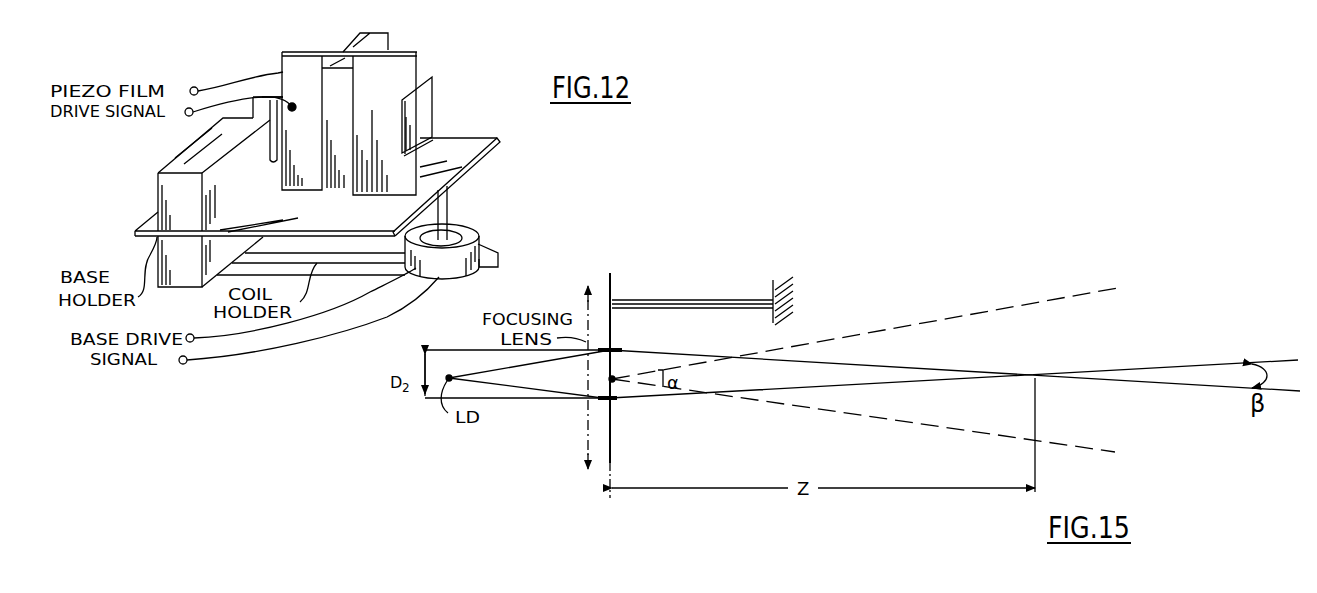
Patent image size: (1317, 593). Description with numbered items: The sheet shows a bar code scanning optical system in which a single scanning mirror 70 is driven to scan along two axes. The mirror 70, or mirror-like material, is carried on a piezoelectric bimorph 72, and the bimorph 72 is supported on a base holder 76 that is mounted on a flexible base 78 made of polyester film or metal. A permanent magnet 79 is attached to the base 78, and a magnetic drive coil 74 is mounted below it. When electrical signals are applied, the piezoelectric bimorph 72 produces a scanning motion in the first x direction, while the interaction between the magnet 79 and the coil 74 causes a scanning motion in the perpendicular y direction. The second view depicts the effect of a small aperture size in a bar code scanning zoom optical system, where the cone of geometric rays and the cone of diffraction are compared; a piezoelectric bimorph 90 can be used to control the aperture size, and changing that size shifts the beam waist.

In FIG. 12, the scanning mirror 70 is at (432, 110).
In FIG. 12, the piezoelectric bimorph 72 is at (417, 60).
In FIG. 12, the magnetic drive coil 74 is at (478, 246).
In FIG. 12, the base holder 76 is at (388, 32).
In FIG. 12, the flexible base 78 is at (493, 140).
In FIG. 12, the permanent magnet 79 is at (447, 212).
In FIG. 15, the piezoelectric bimorph 90 is at (710, 300).